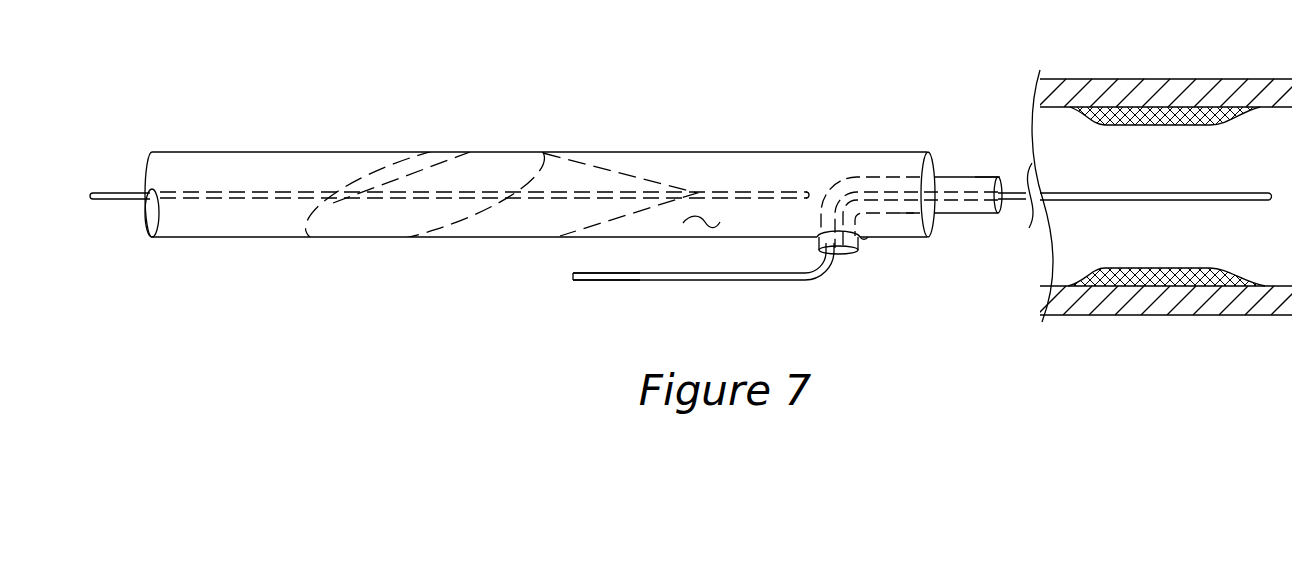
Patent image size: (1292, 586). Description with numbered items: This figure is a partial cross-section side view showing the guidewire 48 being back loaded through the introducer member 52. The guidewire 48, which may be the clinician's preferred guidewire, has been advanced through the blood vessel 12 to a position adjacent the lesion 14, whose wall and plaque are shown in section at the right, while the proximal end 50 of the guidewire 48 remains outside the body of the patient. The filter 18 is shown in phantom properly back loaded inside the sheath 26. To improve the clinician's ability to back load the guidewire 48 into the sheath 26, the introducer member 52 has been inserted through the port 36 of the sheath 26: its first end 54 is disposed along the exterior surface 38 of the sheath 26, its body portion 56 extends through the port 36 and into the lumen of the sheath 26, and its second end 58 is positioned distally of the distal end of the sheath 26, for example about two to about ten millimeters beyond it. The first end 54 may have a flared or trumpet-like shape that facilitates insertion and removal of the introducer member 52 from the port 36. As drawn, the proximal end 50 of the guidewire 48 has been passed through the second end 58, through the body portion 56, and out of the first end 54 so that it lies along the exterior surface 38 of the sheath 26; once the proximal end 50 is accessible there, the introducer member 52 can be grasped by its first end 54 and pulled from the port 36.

The blood vessel 12 is at (1262, 92).
The lesion 14 is at (1126, 113).
The filter 18 is at (404, 171).
The sheath 26 is at (624, 152).
The port 36 is at (819, 235).
The exterior surface 38 is at (692, 228).
The guidewire 48 is at (1130, 203).
The proximal end 50 is at (588, 283).
The introducer member 52 is at (948, 173).
The first end 54 is at (858, 253).
The body portion 56 is at (900, 213).
The second end 58 is at (979, 177).